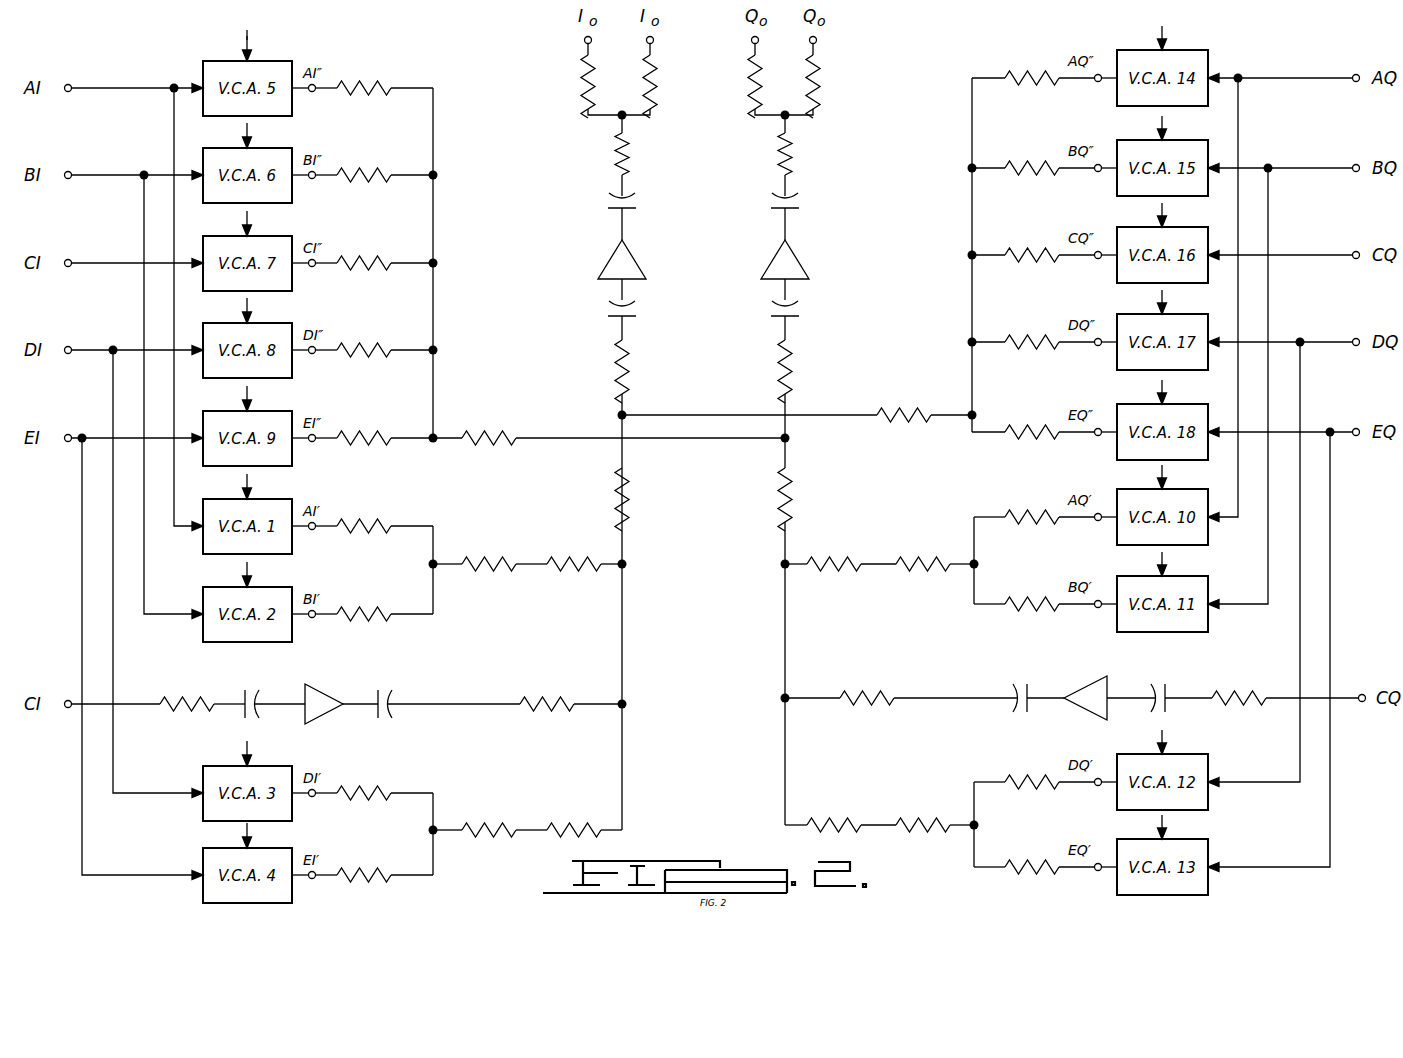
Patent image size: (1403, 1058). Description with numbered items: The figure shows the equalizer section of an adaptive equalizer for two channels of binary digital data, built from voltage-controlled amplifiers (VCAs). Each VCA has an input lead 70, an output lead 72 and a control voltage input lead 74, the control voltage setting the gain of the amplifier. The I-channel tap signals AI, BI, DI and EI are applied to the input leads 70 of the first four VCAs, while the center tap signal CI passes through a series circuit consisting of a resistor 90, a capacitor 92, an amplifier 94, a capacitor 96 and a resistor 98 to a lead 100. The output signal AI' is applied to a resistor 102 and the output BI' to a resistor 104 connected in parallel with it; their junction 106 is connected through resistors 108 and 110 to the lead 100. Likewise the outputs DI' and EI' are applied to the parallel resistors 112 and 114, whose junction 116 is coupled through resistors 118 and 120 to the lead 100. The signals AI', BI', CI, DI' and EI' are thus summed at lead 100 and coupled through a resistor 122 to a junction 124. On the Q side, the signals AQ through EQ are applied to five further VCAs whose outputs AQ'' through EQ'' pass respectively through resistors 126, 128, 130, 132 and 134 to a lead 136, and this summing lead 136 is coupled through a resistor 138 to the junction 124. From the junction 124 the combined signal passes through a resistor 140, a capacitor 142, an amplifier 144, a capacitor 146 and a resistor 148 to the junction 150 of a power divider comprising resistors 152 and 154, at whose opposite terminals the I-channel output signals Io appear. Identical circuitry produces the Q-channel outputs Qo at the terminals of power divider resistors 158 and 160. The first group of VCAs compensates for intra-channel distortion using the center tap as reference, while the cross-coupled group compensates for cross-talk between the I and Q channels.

The input lead 70 is at (118, 81).
The output lead 72 is at (312, 98).
The control voltage input lead 74 is at (250, 52).
The resistor 90 is at (172, 692).
The capacitor 92 is at (249, 690).
The amplifier 94 is at (318, 688).
The capacitor 96 is at (388, 682).
The resistor 98 is at (540, 690).
The lead 100 is at (624, 628).
The resistor 102 is at (372, 512).
The resistor 104 is at (370, 602).
The junction 106 is at (442, 554).
The resistor 108 is at (498, 556).
The resistor 110 is at (576, 566).
The resistor 112 is at (376, 776).
The resistor 114 is at (370, 862).
The junction 116 is at (440, 826).
The resistor 118 is at (502, 822).
The resistor 120 is at (570, 814).
The resistor 122 is at (632, 494).
The junction 124 is at (618, 415).
The resistor 126 is at (1030, 60).
The resistor 128 is at (1040, 162).
The resistor 130 is at (1042, 250).
The resistor 132 is at (1044, 334).
The resistor 134 is at (1044, 424).
The lead 136 is at (972, 360).
The resistor 138 is at (914, 426).
The resistor 140 is at (612, 364).
The capacitor 142 is at (604, 310).
The amplifier 144 is at (600, 260).
The capacitor 146 is at (605, 200).
The resistor 148 is at (630, 164).
The junction 150 is at (616, 118).
The resistor 152 is at (584, 90).
The resistor 154 is at (660, 76).
The resistor 158 is at (750, 82).
The resistor 160 is at (826, 82).